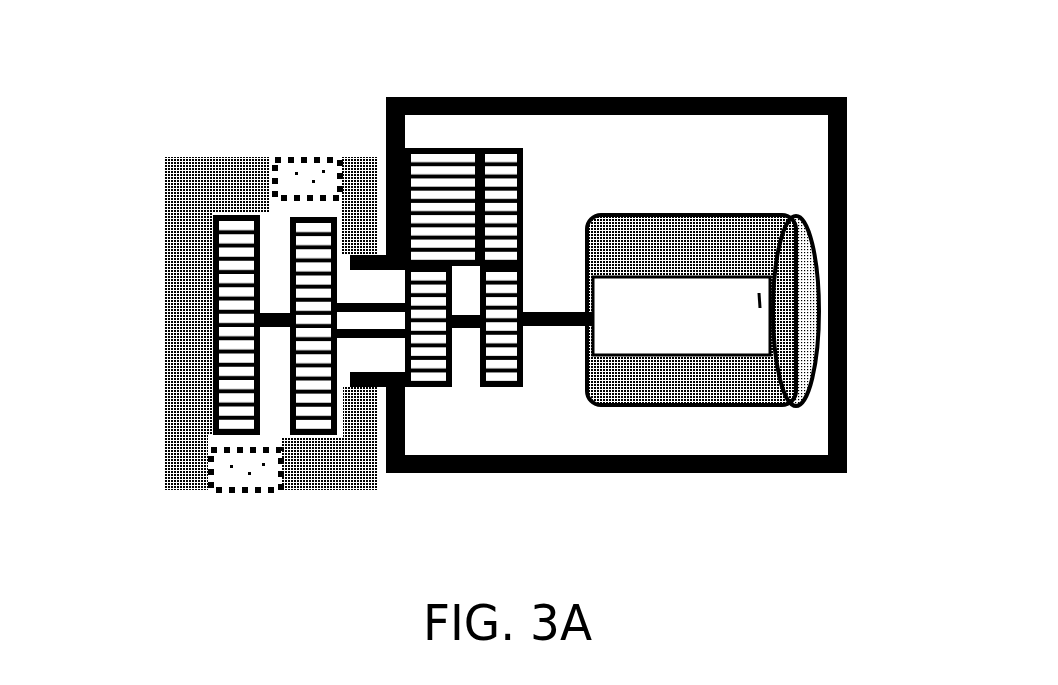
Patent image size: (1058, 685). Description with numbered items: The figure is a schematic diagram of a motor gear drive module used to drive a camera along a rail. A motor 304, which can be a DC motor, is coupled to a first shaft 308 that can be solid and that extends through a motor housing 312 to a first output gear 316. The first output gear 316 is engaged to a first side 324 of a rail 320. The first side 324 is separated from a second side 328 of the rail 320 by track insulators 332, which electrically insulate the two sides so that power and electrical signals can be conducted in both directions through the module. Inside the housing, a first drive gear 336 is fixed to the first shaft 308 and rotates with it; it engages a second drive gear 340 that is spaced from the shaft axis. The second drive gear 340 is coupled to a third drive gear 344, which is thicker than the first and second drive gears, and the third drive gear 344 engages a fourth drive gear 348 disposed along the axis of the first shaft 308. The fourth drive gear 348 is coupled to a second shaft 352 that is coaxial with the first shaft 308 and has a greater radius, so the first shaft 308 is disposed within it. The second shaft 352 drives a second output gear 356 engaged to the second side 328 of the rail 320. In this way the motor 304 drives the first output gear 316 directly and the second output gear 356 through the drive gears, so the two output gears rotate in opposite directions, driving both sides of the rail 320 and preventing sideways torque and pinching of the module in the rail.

The motor 304 is at (735, 250).
The first shaft 308 is at (545, 332).
The motor housing 312 is at (800, 468).
The first output gear 316 is at (245, 398).
The rail 320 is at (169, 139).
The first side of the rail 324 is at (172, 345).
The second side of the rail 328 is at (320, 457).
The track insulators 332 is at (303, 176).
The first drive gear 336 is at (510, 370).
The second drive gear 340 is at (510, 150).
The third drive gear 344 is at (441, 152).
The fourth drive gear 348 is at (433, 385).
The second shaft 352 is at (358, 318).
The second output gear 356 is at (303, 422).